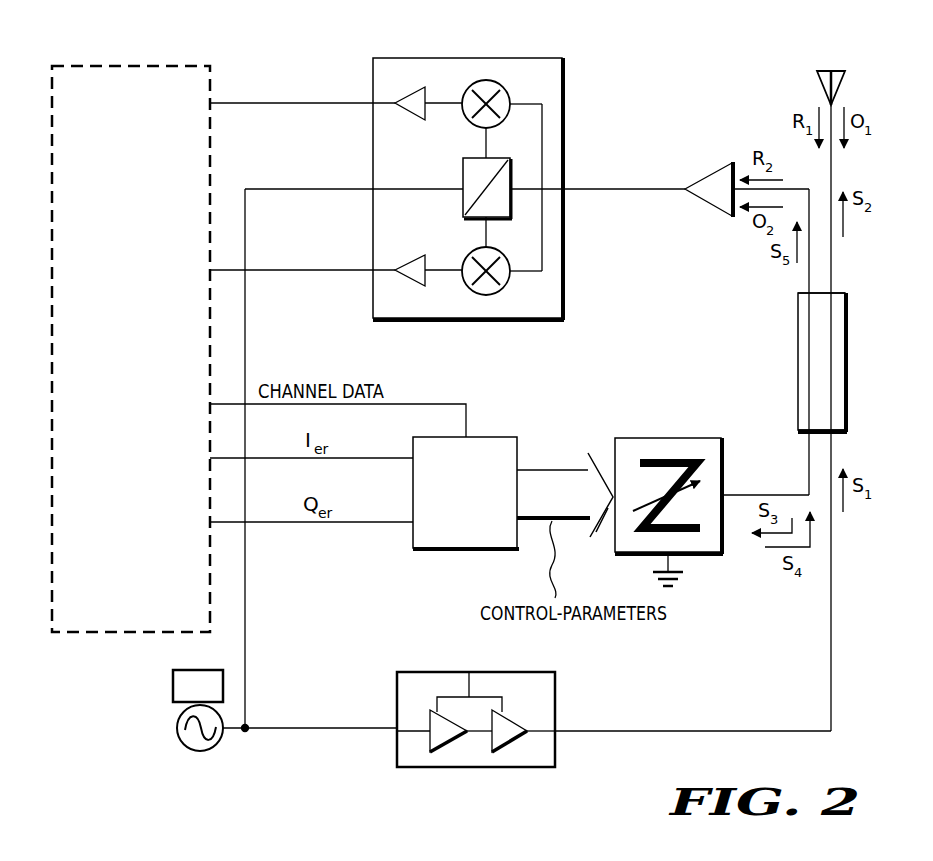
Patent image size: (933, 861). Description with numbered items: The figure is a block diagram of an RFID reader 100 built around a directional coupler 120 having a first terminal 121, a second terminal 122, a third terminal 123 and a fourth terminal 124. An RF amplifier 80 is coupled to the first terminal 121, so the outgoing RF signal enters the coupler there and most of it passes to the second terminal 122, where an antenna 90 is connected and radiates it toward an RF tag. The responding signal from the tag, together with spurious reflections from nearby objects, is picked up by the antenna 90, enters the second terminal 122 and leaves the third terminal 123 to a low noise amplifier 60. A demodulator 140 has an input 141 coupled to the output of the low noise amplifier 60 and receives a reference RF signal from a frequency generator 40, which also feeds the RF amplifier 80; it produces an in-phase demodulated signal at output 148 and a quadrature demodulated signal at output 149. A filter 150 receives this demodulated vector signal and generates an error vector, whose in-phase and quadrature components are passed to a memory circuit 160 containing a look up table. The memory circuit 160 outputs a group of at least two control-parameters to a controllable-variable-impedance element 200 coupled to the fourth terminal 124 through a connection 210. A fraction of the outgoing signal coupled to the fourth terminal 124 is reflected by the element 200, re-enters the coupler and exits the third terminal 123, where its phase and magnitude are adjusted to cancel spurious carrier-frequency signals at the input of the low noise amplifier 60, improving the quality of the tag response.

The RFID reader 100 is at (115, 690).
The filter 150 is at (125, 66).
The output 148 is at (296, 103).
The output 149 is at (296, 270).
The demodulator 140 is at (468, 58).
The input 141 is at (580, 190).
The low noise amplifier 60 is at (718, 163).
The antenna 90 is at (847, 80).
The directional coupler 120 is at (817, 342).
The first terminal 121 is at (845, 440).
The second terminal 122 is at (843, 293).
The third terminal 123 is at (809, 278).
The fourth terminal 124 is at (809, 447).
The impedance connection line 210 is at (748, 495).
The controllable-variable-impedance element 200 is at (713, 557).
The memory circuit 160 is at (437, 552).
The frequency generator 40 is at (200, 752).
The RF amplifier 80 is at (470, 770).